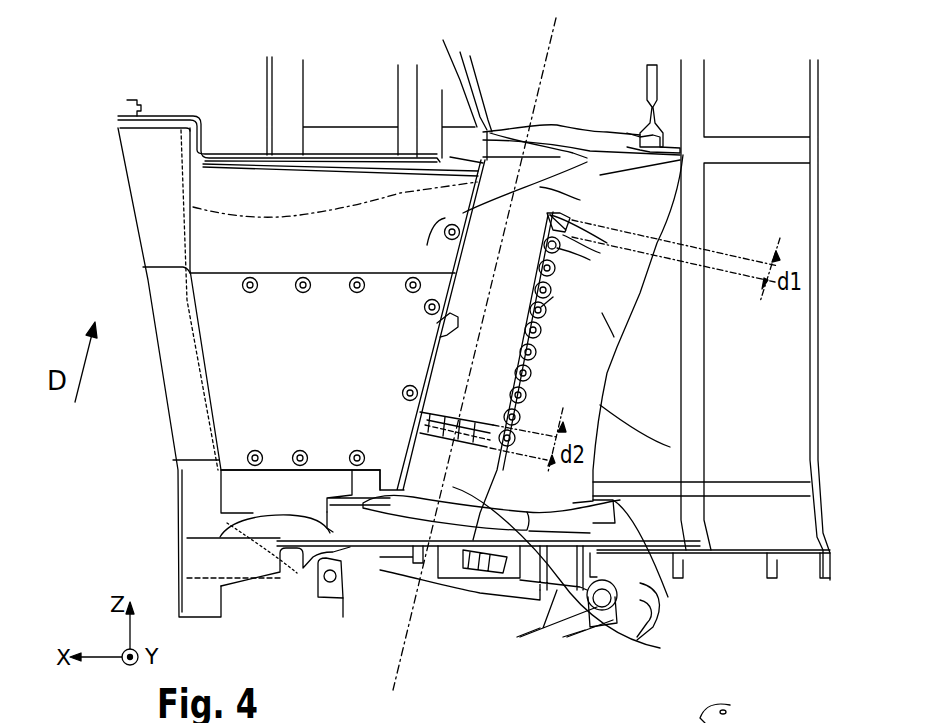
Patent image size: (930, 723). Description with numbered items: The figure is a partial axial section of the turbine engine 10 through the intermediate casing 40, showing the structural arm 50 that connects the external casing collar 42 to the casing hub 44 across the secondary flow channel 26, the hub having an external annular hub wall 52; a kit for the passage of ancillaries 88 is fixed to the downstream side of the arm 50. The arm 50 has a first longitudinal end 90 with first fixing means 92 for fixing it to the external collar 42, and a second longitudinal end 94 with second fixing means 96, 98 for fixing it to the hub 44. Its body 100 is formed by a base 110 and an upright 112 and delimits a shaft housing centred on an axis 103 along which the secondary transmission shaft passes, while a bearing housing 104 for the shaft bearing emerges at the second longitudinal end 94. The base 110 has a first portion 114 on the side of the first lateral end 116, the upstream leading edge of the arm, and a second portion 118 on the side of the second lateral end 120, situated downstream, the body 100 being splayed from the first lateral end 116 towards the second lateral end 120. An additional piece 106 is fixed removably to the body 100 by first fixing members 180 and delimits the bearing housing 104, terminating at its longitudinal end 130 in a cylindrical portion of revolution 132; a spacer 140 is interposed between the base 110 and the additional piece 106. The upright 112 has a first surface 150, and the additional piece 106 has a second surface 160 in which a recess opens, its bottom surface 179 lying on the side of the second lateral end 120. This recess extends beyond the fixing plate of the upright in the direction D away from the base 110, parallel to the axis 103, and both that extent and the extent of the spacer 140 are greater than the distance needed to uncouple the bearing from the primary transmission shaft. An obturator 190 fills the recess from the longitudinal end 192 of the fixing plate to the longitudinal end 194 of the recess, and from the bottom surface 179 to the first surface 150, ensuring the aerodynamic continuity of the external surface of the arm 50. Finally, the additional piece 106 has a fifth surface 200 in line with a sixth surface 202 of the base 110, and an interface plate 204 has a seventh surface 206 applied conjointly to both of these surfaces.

The turbine engine 10 is at (115, 479).
The secondary flow channel 26 is at (793, 352).
The intermediate casing 40 is at (443, 104).
The external casing collar 42 is at (365, 550).
The casing hub 44 is at (571, 133).
The external annular hub wall 52 is at (567, 132).
The arm 50 is at (620, 418).
The kit for the passage of ancillaries 88 is at (242, 142).
The first longitudinal end 90 is at (430, 547).
The first fixing means 92 is at (190, 538).
The second longitudinal end 94 is at (597, 148).
The second fixing means 96 is at (677, 170).
The second fixing means 98 is at (583, 157).
The body 100 is at (675, 325).
The upright 112 is at (590, 260).
The axis 103 is at (552, 43).
The bearing housing 104 is at (545, 722).
The additional piece 106 is at (624, 418).
The base 110 is at (621, 574).
The first portion 114 is at (668, 597).
The first lateral end 116 is at (600, 430).
The second portion 118 is at (660, 648).
The second lateral end 120 is at (440, 356).
The longitudinal end 130 is at (500, 722).
The cylindrical portion of revolution 132 is at (537, 144).
The spacer 140 is at (427, 440).
The first surface 150 is at (580, 218).
The second surface 160 is at (580, 200).
The bottom surface 179 is at (553, 297).
The first fixing member 180 is at (600, 253).
The obturator 190 is at (550, 215).
The longitudinal end 192 is at (607, 243).
The longitudinal end 194 is at (433, 247).
The fifth surface 200 is at (402, 385).
The sixth surface 202 is at (378, 470).
The interface plate 204 is at (383, 470).
The seventh surface 206 is at (437, 323).